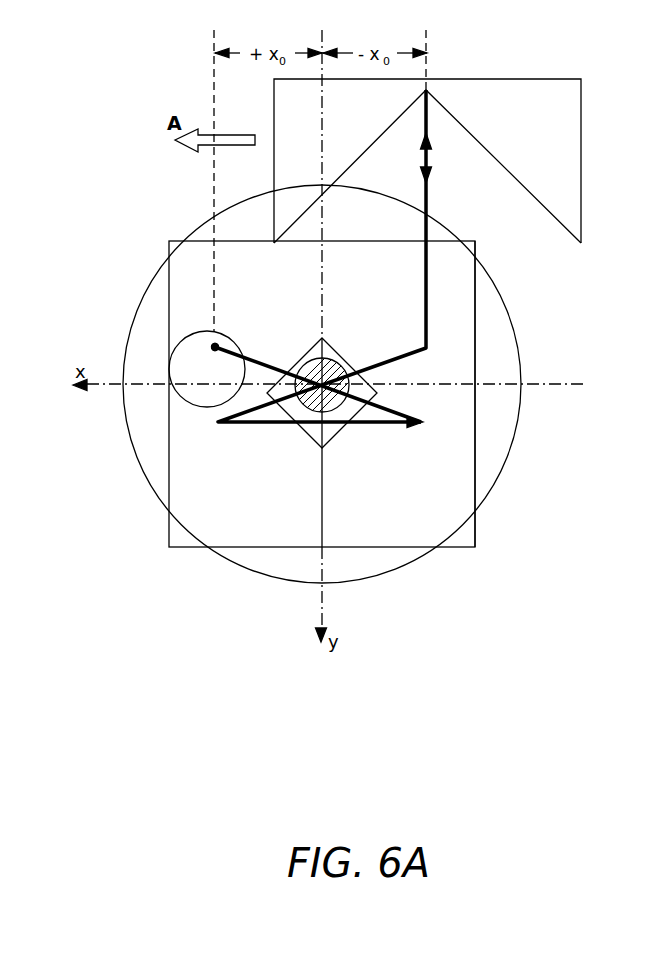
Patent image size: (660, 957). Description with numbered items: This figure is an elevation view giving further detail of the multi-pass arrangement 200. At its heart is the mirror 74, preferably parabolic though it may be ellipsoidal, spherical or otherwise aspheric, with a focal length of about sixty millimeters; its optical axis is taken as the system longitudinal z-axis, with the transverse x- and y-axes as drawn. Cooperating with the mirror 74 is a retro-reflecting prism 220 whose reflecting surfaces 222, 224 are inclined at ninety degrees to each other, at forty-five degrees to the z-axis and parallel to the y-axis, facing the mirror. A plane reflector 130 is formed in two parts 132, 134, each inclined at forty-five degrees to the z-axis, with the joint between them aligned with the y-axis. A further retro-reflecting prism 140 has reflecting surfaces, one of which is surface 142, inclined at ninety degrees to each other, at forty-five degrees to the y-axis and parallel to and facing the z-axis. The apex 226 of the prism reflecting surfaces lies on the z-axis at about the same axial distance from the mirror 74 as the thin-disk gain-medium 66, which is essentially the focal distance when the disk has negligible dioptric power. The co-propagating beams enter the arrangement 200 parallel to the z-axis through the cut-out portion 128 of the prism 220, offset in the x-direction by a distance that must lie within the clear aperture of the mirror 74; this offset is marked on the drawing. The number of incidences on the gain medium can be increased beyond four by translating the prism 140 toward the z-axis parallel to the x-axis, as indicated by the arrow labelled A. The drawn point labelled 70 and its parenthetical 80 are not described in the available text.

The multi-pass arrangement 200 is at (473, 710).
The retro-reflecting prism 140 is at (583, 158).
The reflecting surface 142 is at (348, 164).
The mirror 74 is at (513, 452).
The plane reflector 130 is at (477, 338).
The retro-reflecting prism 220 is at (477, 522).
The plane reflector part 132 is at (258, 264).
The plane reflector part 134 is at (446, 327).
The cut-out portion 128 is at (196, 354).
The thin-disk gain-medium 66 is at (208, 336).
The light source 70 is at (203, 337).
The light emitting point 80 is at (150, 267).
The reflecting surface 222 is at (246, 513).
The reflecting surface 224 is at (412, 512).
The apex 226 is at (318, 505).